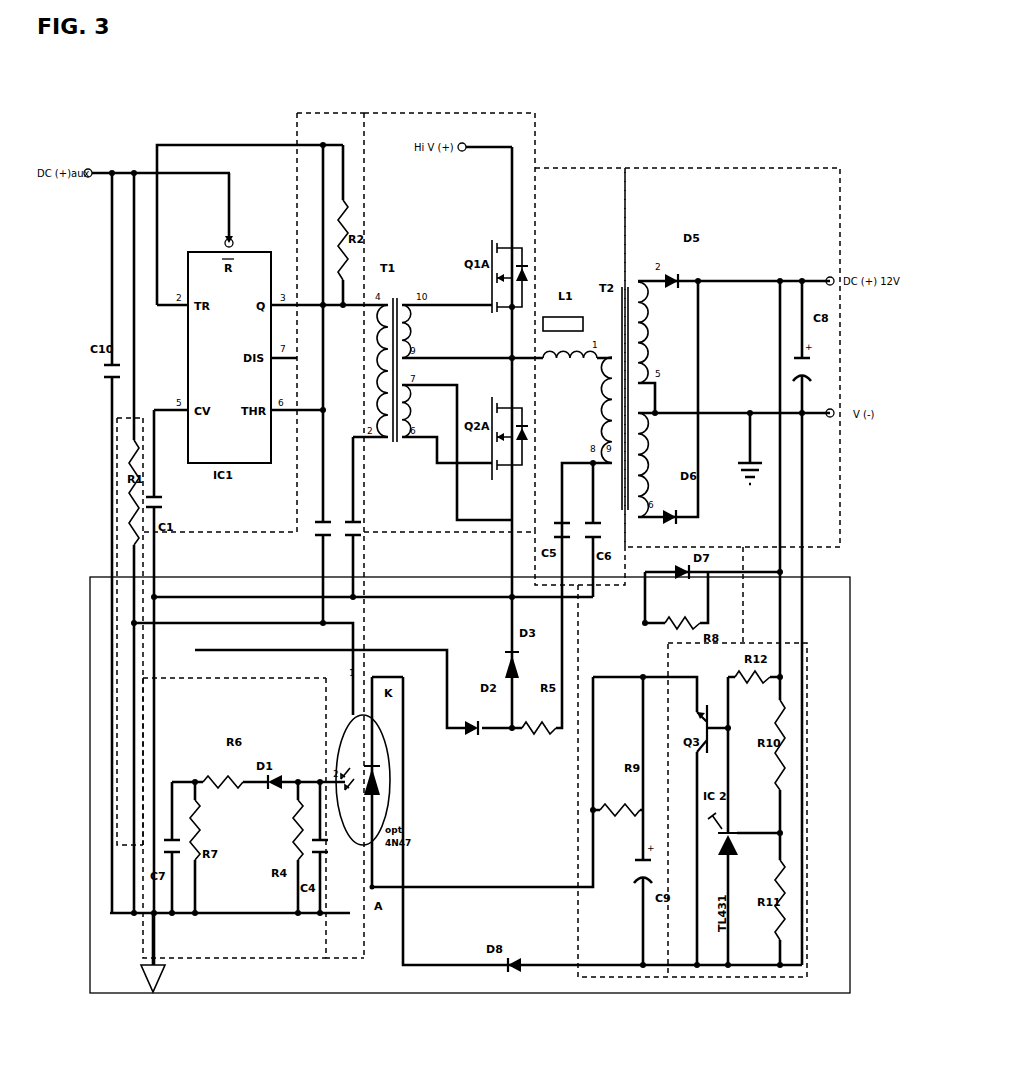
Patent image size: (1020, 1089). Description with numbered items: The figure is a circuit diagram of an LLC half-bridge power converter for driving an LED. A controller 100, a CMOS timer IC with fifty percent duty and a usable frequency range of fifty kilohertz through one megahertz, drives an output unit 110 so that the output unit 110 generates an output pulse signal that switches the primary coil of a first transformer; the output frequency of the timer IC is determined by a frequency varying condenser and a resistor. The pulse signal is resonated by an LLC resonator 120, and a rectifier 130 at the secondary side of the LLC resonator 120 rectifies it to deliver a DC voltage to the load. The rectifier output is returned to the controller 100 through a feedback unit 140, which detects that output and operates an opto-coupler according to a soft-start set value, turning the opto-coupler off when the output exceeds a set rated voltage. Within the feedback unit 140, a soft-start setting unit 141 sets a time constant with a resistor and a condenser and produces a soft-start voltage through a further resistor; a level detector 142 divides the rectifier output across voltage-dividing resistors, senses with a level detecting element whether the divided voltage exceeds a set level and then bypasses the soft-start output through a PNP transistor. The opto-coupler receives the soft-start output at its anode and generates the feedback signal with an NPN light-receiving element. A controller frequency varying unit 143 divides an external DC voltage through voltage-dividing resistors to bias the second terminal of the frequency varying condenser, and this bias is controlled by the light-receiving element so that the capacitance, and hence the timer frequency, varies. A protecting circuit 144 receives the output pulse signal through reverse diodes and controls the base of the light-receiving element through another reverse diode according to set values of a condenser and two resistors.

The controller 100 is at (242, 250).
The output unit 110 is at (437, 130).
The LLC resonator 120 is at (562, 172).
The rectifier 130 is at (697, 168).
The feedback unit 140 is at (552, 978).
The soft-start setting unit 141 is at (612, 978).
The level detector 142 is at (742, 978).
The controller frequency varying unit 143 is at (346, 953).
The protecting circuit 144 is at (209, 953).